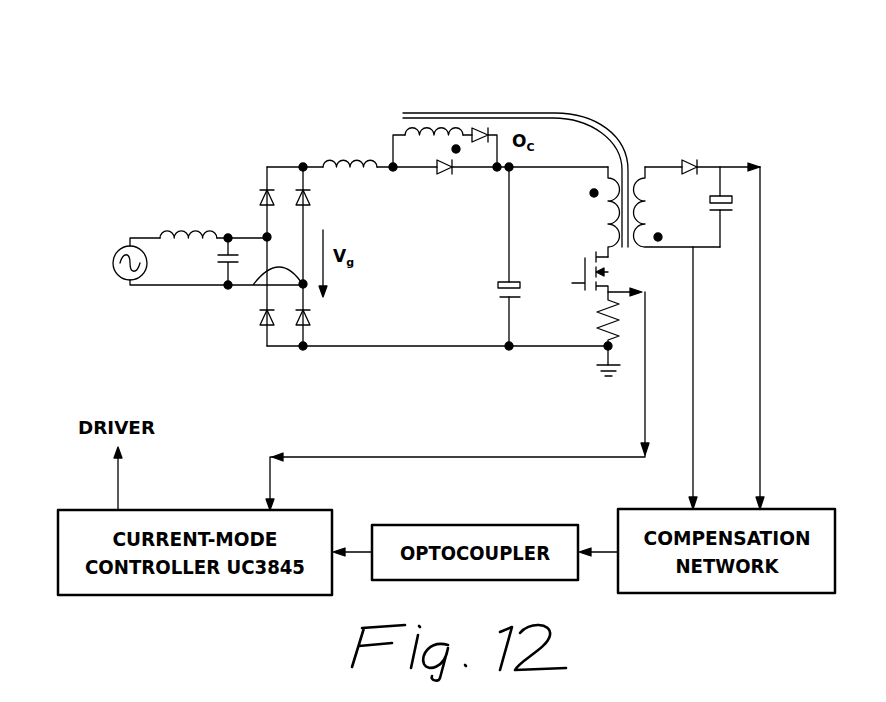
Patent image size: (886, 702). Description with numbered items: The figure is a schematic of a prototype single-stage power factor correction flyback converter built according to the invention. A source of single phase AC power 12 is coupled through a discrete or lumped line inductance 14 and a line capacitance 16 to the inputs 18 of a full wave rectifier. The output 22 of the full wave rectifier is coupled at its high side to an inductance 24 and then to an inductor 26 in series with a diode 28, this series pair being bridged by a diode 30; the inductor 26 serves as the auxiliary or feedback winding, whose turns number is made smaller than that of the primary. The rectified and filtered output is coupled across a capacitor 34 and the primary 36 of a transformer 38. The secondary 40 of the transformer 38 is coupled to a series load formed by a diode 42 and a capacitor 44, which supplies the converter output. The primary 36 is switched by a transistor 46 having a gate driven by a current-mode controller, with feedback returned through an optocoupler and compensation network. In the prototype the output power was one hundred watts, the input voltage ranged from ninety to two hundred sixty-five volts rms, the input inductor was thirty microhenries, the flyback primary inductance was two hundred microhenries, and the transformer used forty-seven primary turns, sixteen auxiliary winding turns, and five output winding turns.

The source of single phase AC power 12 is at (118, 247).
The line inductance 14 is at (172, 224).
The line capacitance 16 is at (212, 262).
The inputs of full wave rectifier 18 is at (267, 238).
The output of full wave rectifier 22 is at (305, 165).
The inductance 24 is at (332, 163).
The inductor 26 is at (453, 140).
The diode 28 is at (487, 135).
The diode 30 is at (432, 170).
The capacitor 34 is at (495, 292).
The primary of transformer 36 is at (607, 232).
The transformer 38 is at (635, 158).
The secondary of transformer 40 is at (645, 195).
The diode 42 is at (700, 160).
The capacitor 44 is at (737, 205).
The transistor 46 is at (615, 278).